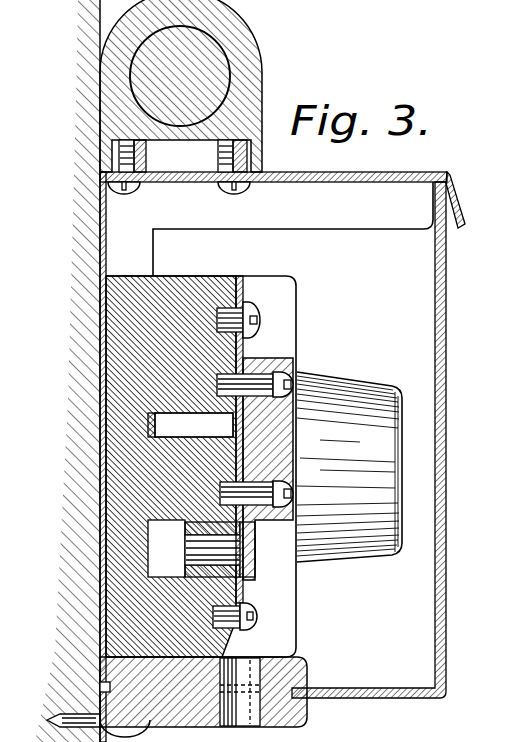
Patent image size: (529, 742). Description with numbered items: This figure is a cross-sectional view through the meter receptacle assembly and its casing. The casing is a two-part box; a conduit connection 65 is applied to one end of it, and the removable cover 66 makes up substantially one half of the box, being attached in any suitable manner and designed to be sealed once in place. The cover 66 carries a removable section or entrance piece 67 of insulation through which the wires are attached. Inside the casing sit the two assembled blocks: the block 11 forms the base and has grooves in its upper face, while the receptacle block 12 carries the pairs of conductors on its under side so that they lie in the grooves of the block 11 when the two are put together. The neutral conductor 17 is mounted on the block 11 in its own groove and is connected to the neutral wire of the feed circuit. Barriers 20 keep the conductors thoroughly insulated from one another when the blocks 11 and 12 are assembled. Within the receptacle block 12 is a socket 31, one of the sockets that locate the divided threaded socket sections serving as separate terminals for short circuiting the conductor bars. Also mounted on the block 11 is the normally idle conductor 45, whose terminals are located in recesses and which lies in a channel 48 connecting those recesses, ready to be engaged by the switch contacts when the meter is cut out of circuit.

The block 11 is at (187, 276).
The receptacle block 12 is at (296, 453).
The neutral conductor 17 is at (245, 351).
The barriers 20 is at (293, 629).
The socket 31 is at (373, 381).
The normally idle conductor 45 is at (117, 395).
The channel 48 is at (157, 436).
The conduit connection 65 is at (263, 84).
The removable cover 66 is at (446, 360).
The entrance piece 67 is at (305, 716).